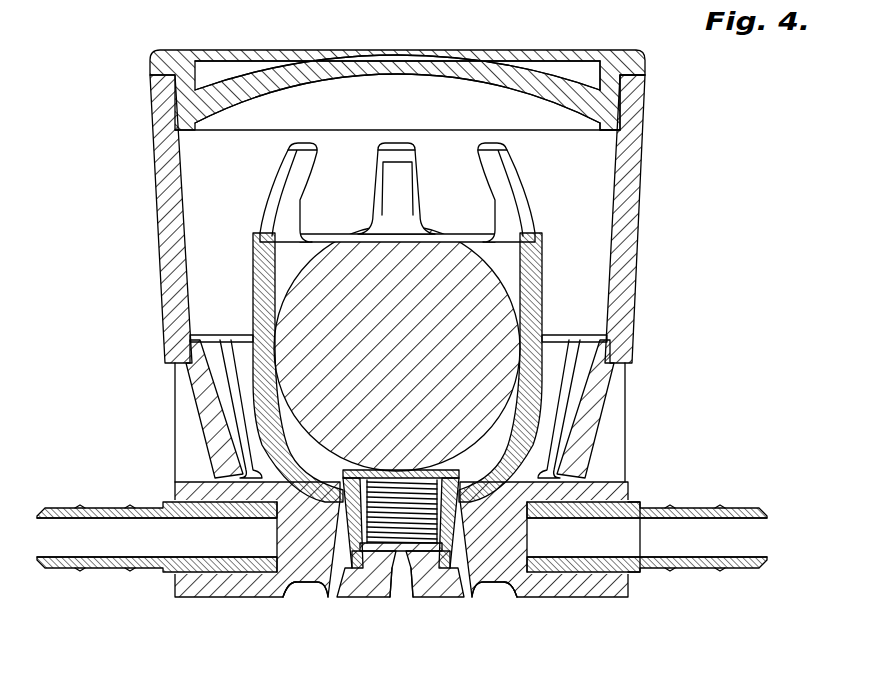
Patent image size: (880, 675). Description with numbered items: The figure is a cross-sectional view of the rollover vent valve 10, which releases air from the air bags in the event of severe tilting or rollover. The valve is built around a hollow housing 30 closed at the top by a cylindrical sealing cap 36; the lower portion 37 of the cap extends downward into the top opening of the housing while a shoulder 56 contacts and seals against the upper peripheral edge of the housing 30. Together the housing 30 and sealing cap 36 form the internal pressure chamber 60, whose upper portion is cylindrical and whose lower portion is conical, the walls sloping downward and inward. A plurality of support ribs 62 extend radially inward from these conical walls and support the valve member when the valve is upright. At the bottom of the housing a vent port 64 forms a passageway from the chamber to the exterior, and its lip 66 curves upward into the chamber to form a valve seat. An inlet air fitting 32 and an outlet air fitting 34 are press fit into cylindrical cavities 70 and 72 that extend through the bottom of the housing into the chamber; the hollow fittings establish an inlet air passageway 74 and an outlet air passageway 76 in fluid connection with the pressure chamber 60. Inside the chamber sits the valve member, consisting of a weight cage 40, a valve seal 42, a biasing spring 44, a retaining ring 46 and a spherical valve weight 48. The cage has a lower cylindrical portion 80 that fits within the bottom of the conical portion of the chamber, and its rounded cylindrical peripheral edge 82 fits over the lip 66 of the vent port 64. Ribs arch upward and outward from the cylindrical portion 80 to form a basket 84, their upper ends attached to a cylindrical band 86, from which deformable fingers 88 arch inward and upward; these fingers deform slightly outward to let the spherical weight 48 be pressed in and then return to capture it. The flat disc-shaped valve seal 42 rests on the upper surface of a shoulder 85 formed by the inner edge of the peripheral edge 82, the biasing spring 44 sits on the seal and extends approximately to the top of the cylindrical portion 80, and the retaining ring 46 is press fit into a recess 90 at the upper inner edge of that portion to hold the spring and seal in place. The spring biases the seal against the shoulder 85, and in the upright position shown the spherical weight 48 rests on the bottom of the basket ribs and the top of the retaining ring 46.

The rollover vent valve 10 is at (750, 211).
The housing 30 is at (166, 179).
The inlet air fitting 32 is at (78, 570).
The outlet air fitting 34 is at (707, 572).
The sealing cap 36 is at (433, 52).
The lower portion of the sealing cap 37 is at (625, 100).
The weight cage 40 is at (540, 321).
The valve seal 42 is at (437, 551).
The biasing spring 44 is at (437, 520).
The retaining ring 46 is at (330, 463).
The spherical valve weight 48 is at (323, 283).
The shoulder 56 is at (168, 56).
The internal pressure chamber 60 is at (227, 223).
The support ribs 62 is at (240, 393).
The vent port 64 is at (403, 590).
The lip 66 is at (345, 597).
The cylindrical cavity 70 is at (297, 552).
The cylindrical cavity 72 is at (592, 578).
The inlet air passageway 74 is at (115, 545).
The outlet air passageway 76 is at (700, 540).
The lower cylindrical portion 80 is at (362, 510).
The rounded cylindrical peripheral edge 82 is at (462, 570).
The basket 84 is at (512, 292).
The shoulder 85 is at (333, 585).
The cylindrical band 86 is at (502, 260).
The deformable fingers 88 is at (289, 167).
The recess 90 is at (440, 478).